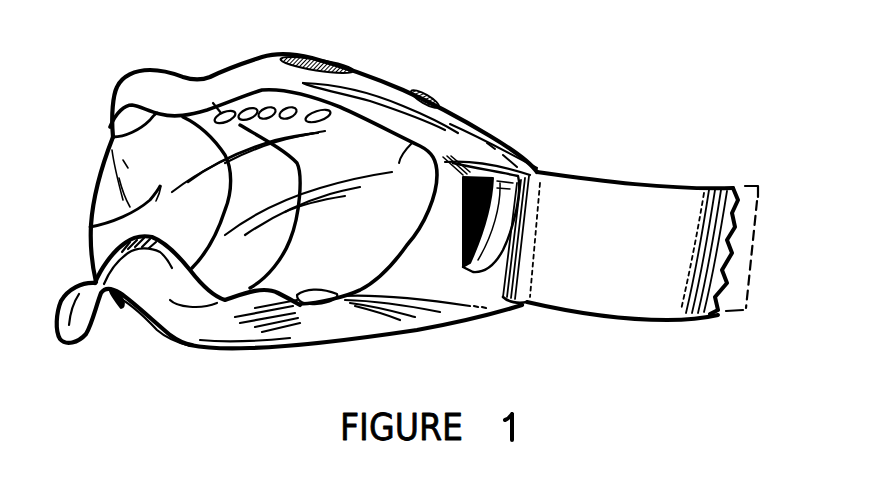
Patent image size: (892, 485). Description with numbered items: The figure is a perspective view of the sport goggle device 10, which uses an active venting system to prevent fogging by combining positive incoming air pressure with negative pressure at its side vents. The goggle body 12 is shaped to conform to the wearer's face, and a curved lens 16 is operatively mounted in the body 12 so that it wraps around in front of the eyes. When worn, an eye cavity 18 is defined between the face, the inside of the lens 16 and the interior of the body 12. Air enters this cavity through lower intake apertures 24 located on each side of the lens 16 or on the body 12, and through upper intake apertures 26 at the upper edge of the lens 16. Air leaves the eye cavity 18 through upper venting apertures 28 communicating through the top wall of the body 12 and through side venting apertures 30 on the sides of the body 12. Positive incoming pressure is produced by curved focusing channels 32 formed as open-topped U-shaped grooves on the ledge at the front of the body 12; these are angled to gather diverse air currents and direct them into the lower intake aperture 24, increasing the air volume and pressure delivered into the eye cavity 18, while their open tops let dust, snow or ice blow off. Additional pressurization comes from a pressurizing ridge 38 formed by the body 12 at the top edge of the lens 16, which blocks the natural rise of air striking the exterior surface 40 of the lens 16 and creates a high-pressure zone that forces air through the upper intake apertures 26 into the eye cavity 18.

The device 10 is at (450, 86).
The goggle body 12 is at (413, 134).
The lens 16 is at (98, 190).
The eye cavity 18 is at (369, 231).
The lower intake apertures 24 is at (307, 296).
The upper intake apertures 26 is at (259, 110).
The upper venting apertures 28 is at (323, 62).
The side venting apertures 30 is at (463, 257).
The focusing channels 32 is at (260, 328).
The pressurizing ridge 38 is at (113, 135).
The exterior surface 40 is at (90, 227).